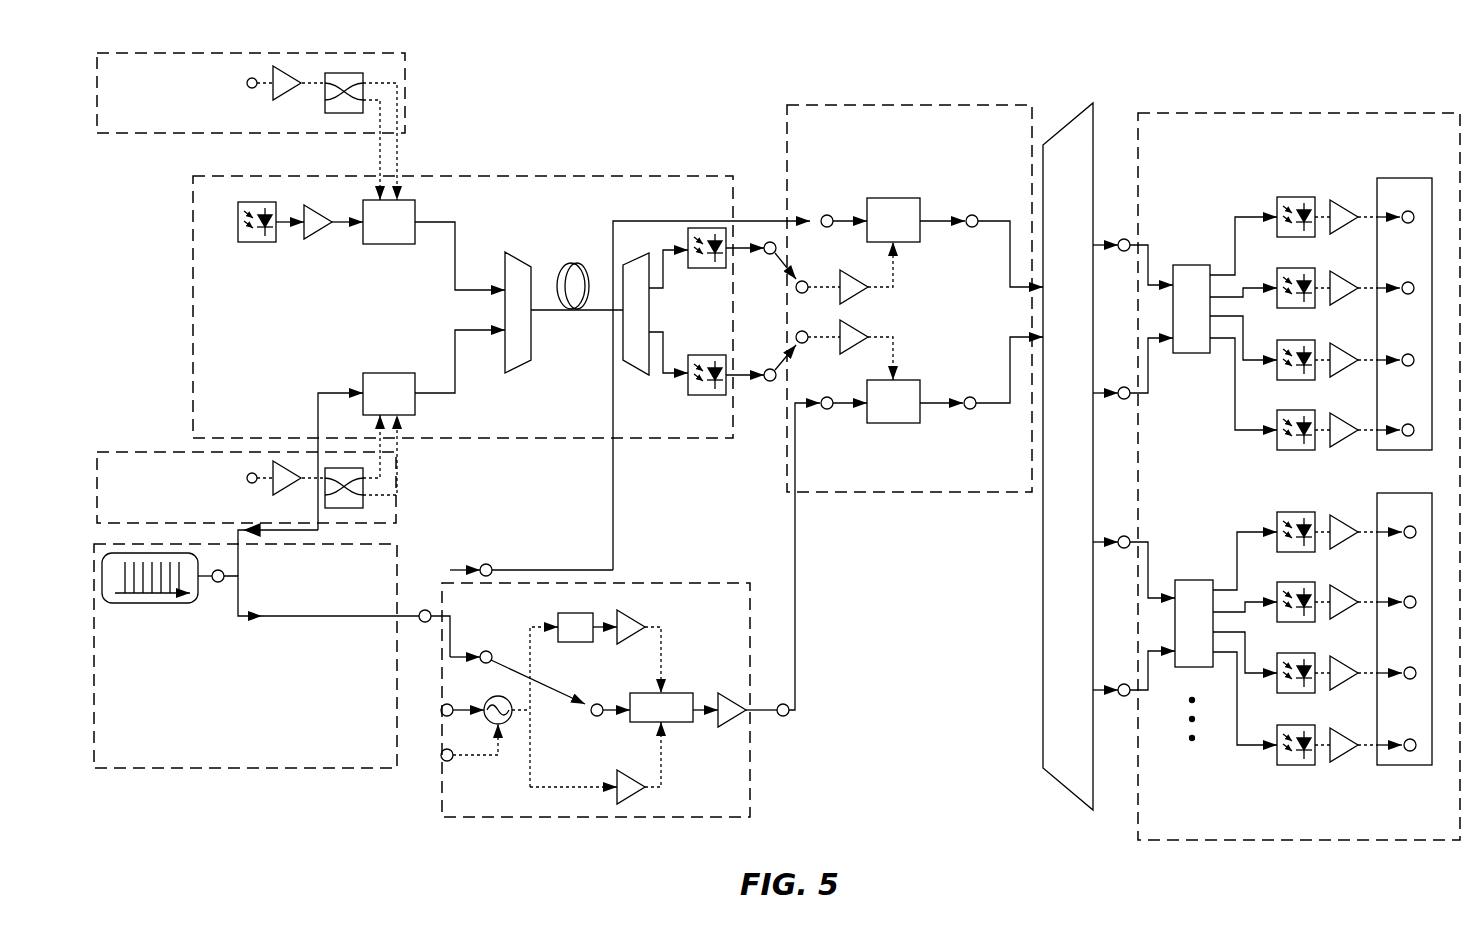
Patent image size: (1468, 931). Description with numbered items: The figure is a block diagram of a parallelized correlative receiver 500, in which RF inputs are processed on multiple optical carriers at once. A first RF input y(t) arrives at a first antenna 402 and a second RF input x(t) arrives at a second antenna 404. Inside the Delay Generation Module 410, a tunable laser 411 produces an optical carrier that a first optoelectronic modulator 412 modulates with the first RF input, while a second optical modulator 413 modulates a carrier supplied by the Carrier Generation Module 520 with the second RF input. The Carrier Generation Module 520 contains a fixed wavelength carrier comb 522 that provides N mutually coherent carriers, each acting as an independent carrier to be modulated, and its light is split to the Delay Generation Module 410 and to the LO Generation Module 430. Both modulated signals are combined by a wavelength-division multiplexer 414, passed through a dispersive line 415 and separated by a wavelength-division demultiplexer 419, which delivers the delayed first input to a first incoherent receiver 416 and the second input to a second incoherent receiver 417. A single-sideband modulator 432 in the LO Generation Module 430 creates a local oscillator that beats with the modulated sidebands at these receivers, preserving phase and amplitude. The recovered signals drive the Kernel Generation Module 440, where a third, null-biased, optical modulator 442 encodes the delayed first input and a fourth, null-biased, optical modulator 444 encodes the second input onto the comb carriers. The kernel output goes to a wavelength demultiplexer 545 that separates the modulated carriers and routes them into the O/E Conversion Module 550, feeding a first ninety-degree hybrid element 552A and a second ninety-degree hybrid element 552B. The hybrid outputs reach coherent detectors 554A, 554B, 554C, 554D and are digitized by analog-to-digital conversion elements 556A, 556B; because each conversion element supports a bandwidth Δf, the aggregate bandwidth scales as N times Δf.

The parallelized correlative receiver 500 is at (188, 26).
The first antenna 402 is at (343, 53).
The second antenna 404 is at (148, 452).
The Delay Generation Module 410 is at (683, 176).
The tunable laser 411 is at (262, 242).
The first optoelectronic modulator 412 is at (413, 200).
The second optical modulator 413 is at (413, 415).
The wavelength-division multiplexer 414 is at (520, 373).
The dispersive line 415 is at (577, 264).
The first incoherent receiver 416 is at (688, 234).
The second incoherent receiver 417 is at (718, 355).
The wavelength-division demultiplexer 419 is at (636, 375).
The Local Oscillator (LO) Generation Module 430 is at (668, 583).
The single-sideband modulator 432 is at (675, 693).
The Kernel Generation Module 440 is at (878, 105).
The third, null-biased, optical modulator 442 is at (912, 242).
The fourth, null-biased, optical modulator 444 is at (912, 380).
The Carrier Generation Module 520 is at (312, 768).
The fixed wavelength carrier comb 522 is at (170, 603).
The wavelength demultiplexer 545 is at (1093, 110).
The O/E Conversion Module 550 is at (1340, 113).
The first 90-degree hybrid element 552A is at (1192, 265).
The second 90-degree hybrid element 552B is at (1196, 580).
The first coherent detector 554A is at (1300, 197).
The coherent detector 554B is at (1300, 271).
The coherent detector 554C is at (1300, 341).
The coherent detector 554D is at (1300, 411).
The analog-to-digital conversion element 556A is at (1385, 178).
The analog-to-digital conversion element 556B is at (1385, 493).